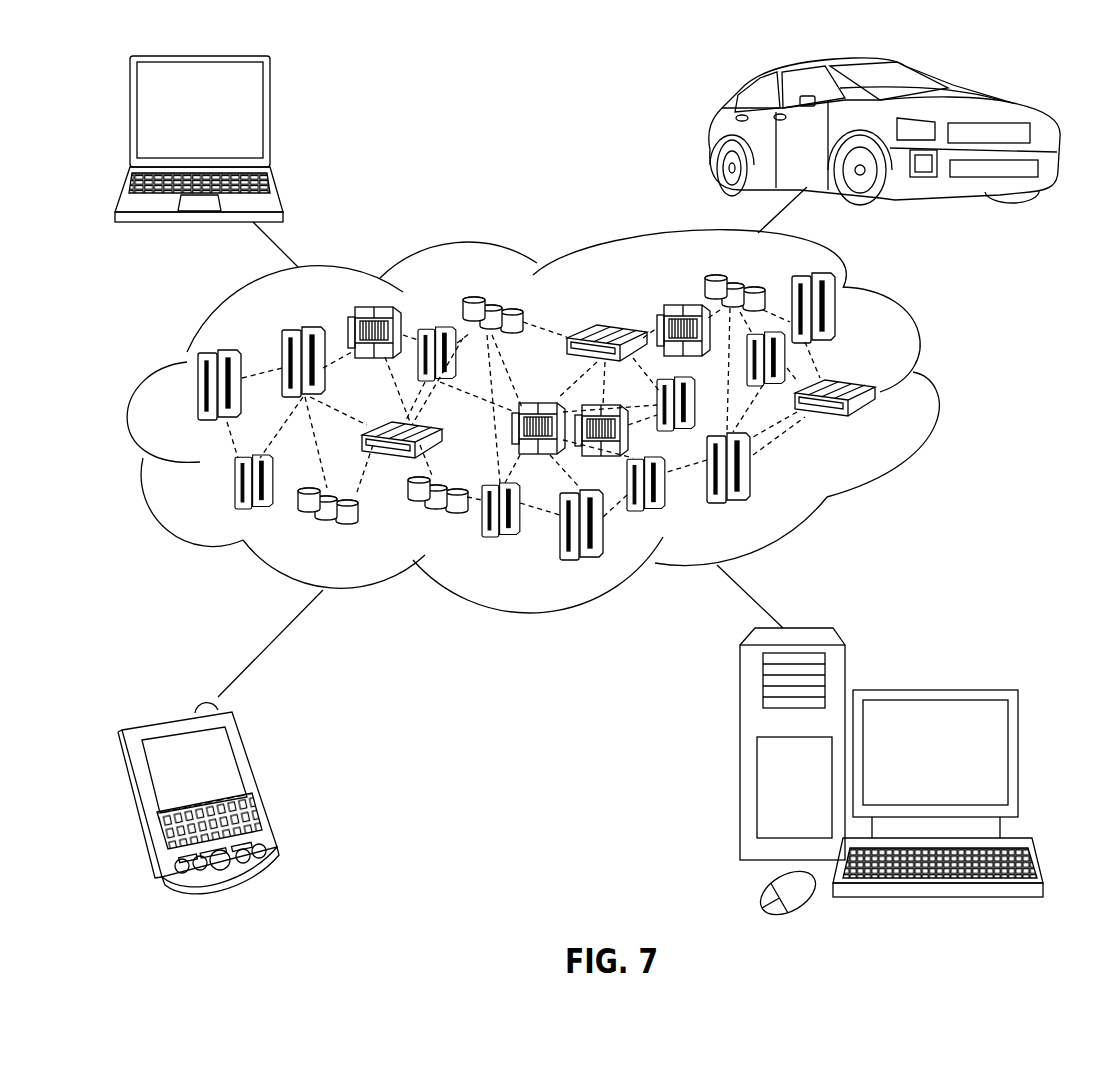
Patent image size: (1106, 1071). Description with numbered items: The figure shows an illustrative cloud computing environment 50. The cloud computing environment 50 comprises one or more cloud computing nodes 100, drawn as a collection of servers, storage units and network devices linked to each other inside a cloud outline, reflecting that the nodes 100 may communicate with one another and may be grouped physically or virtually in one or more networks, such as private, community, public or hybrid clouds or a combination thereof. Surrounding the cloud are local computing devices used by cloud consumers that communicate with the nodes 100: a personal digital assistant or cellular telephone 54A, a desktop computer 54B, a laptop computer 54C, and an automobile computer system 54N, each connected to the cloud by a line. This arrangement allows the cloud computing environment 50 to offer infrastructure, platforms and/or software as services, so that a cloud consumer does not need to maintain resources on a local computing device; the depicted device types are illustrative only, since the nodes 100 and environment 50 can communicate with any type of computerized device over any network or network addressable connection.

The laptop computer 54C is at (268, 120).
The automobile computer system 54N is at (715, 138).
The personal digital assistant (PDA) or cellular telephone 54A is at (258, 782).
The desktop computer 54B is at (932, 690).
The cloud computing environment 50 is at (933, 395).
The cloud computing nodes 100 is at (873, 425).